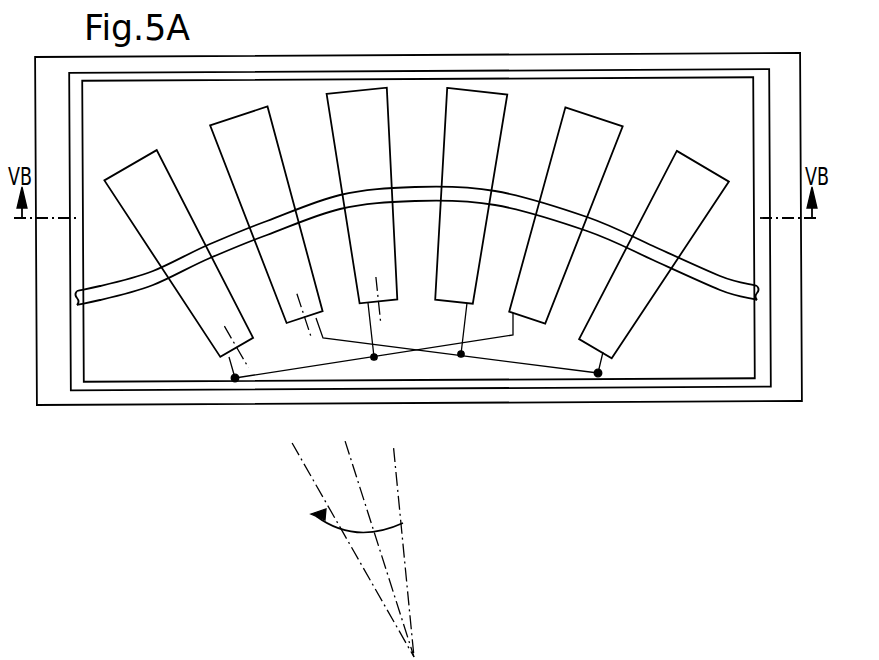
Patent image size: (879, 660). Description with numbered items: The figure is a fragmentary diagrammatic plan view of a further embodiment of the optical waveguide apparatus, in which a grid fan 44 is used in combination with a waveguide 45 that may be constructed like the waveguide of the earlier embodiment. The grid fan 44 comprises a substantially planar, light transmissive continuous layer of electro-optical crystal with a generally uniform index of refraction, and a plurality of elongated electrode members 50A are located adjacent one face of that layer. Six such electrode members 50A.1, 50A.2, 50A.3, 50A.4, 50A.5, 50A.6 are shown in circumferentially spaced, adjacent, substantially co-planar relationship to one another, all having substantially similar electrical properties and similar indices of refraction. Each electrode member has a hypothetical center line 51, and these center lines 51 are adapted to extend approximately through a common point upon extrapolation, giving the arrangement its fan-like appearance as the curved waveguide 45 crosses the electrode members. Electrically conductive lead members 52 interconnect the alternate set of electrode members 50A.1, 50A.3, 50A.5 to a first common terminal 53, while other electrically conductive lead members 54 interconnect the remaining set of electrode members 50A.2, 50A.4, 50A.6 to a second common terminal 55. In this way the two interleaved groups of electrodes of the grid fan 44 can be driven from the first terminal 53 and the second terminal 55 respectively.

The grid fan 44 is at (677, 104).
The waveguide 45 is at (610, 238).
The electrode members 50A is at (457, 87).
The electrode member 50A.1 is at (178, 253).
The electrode member 50A.2 is at (266, 215).
The electrode member 50A.3 is at (362, 196).
The electrode member 50A.4 is at (471, 196).
The electrode member 50A.5 is at (566, 215).
The electrode member 50A.6 is at (654, 254).
The center line 51 is at (330, 468).
The lead members 52 is at (395, 355).
The first common terminal 53 is at (235, 378).
The lead members 54 is at (520, 365).
The second common terminal 55 is at (598, 373).